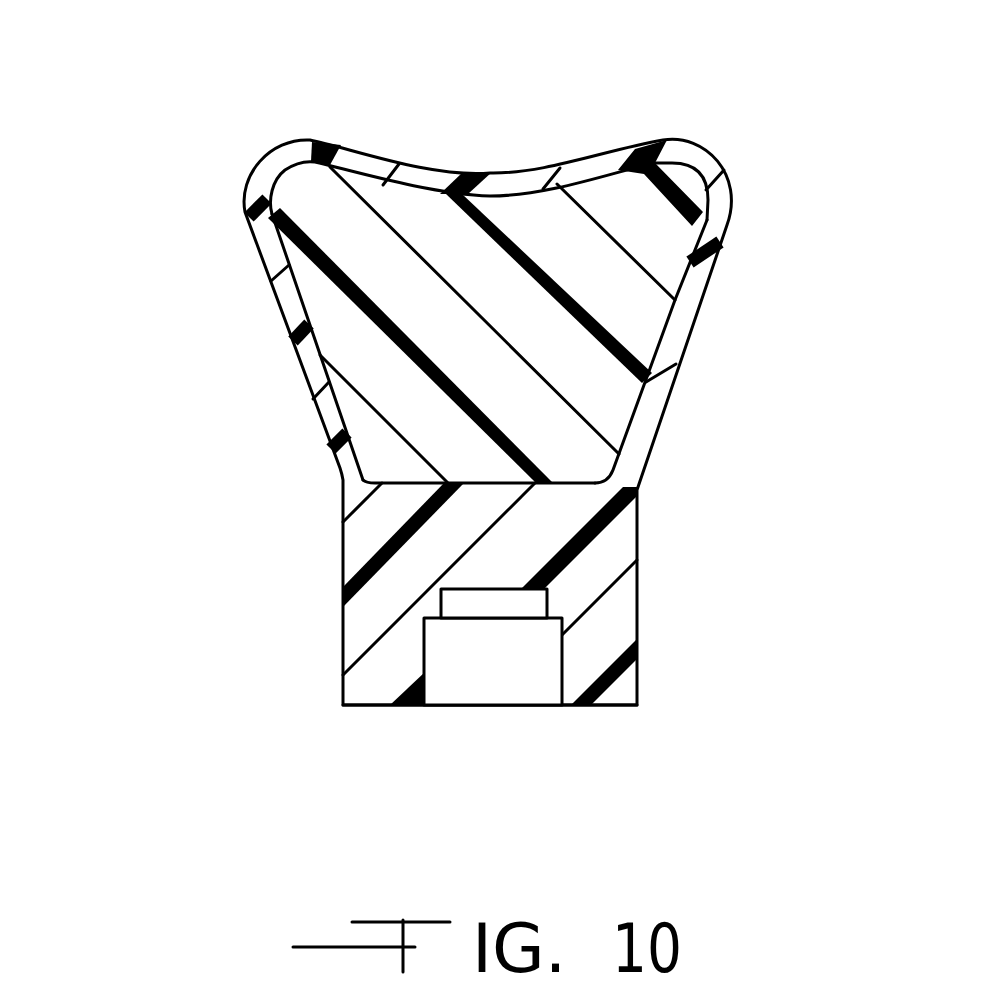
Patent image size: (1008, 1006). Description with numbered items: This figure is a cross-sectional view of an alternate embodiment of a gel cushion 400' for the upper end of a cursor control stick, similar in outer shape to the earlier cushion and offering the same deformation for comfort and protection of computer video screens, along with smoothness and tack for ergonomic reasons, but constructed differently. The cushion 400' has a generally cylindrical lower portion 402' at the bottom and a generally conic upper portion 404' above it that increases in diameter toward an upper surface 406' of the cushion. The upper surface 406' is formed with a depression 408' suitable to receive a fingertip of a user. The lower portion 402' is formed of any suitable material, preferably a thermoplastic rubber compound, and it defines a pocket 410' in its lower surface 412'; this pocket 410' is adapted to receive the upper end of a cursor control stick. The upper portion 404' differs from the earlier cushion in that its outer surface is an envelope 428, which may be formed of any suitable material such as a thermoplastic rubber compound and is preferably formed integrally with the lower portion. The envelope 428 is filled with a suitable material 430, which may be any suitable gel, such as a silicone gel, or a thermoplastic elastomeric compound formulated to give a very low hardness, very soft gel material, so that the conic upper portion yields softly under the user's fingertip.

The cushion 400' is at (389, 422).
The lower portion 402' is at (402, 594).
The upper portion 404' is at (251, 347).
The upper surface 406' is at (272, 155).
The depression 408' is at (497, 140).
The pocket 410' is at (460, 697).
The lower surface 412' is at (535, 725).
The envelope 428 is at (676, 362).
The material 430 is at (665, 252).